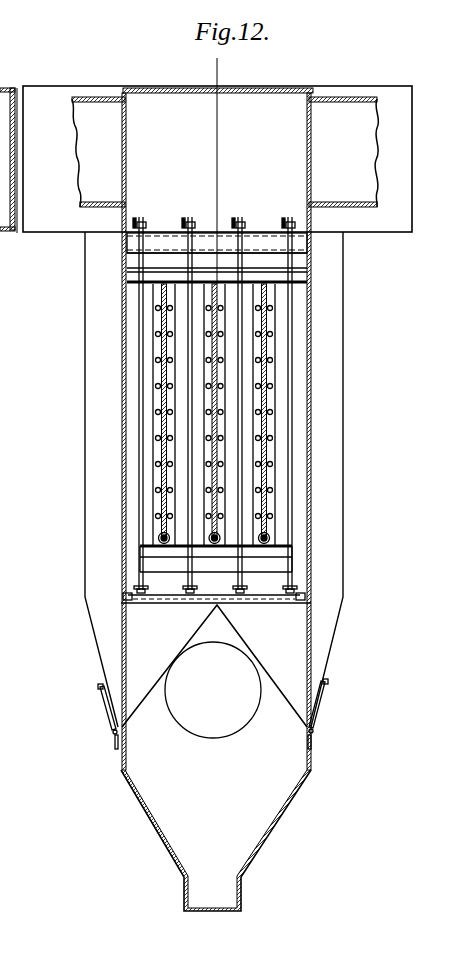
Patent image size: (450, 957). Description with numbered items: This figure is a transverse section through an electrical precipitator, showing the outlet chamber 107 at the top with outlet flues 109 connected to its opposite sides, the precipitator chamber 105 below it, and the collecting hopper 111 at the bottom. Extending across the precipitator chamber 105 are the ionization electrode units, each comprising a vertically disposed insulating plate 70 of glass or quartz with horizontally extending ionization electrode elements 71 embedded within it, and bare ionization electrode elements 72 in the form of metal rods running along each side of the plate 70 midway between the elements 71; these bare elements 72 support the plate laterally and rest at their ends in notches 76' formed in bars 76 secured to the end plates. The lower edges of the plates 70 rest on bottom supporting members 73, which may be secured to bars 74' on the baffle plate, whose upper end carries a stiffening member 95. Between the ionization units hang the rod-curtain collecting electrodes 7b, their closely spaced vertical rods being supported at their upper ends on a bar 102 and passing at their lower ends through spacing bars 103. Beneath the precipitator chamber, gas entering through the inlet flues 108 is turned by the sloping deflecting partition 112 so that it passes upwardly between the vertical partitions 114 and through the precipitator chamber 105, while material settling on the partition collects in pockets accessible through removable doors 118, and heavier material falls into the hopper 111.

The outlet chamber 107 is at (217, 429).
The outlet flues 109 is at (225, 152).
The collecting electrodes 7b is at (178, 262).
The bar 102 is at (285, 221).
The stiffening member 95 is at (277, 278).
The precipitator chamber 105 is at (247, 432).
The bars 76 is at (131, 415).
The notches 76' is at (129, 411).
The ionization electrode elements 71 is at (262, 291).
The plate 70 is at (268, 481).
The bare ionization electrode elements 72 is at (268, 335).
The bottom supporting members 73 is at (270, 532).
The bars 74' is at (260, 545).
The spacing bars 103 is at (290, 587).
The vertical partitions 114 is at (216, 625).
The deflecting partition 112 is at (262, 668).
The inlet flues 108 is at (223, 733).
The removable closure members or doors 118 is at (105, 707).
The collecting hopper 111 is at (267, 827).